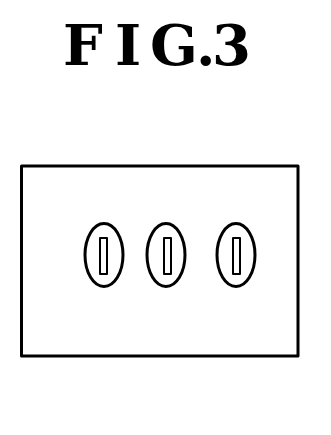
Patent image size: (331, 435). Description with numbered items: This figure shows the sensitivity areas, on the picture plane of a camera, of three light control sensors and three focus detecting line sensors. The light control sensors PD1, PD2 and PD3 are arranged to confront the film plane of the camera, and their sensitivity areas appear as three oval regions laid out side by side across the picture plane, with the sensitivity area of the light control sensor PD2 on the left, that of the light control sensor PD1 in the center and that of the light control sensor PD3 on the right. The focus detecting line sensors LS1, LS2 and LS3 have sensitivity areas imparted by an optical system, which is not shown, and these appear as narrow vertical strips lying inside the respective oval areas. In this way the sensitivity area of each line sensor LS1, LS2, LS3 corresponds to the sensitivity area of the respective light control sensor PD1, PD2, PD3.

The focus detecting line sensor LS1 is at (172, 249).
The focus detecting line sensor LS2 is at (100, 246).
The focus detecting line sensor LS3 is at (240, 249).
The light control sensor PD1 is at (179, 284).
The light control sensor PD2 is at (113, 283).
The light control sensor PD3 is at (247, 285).